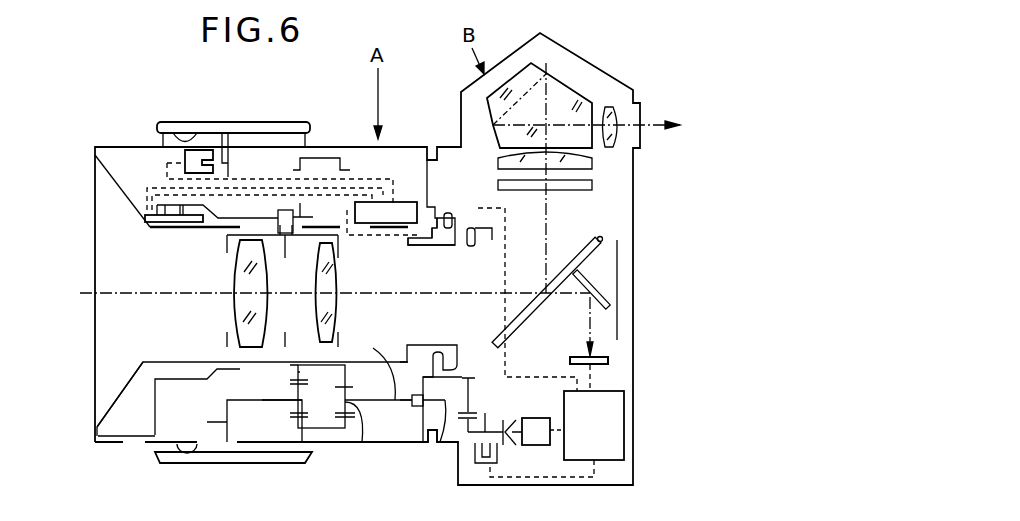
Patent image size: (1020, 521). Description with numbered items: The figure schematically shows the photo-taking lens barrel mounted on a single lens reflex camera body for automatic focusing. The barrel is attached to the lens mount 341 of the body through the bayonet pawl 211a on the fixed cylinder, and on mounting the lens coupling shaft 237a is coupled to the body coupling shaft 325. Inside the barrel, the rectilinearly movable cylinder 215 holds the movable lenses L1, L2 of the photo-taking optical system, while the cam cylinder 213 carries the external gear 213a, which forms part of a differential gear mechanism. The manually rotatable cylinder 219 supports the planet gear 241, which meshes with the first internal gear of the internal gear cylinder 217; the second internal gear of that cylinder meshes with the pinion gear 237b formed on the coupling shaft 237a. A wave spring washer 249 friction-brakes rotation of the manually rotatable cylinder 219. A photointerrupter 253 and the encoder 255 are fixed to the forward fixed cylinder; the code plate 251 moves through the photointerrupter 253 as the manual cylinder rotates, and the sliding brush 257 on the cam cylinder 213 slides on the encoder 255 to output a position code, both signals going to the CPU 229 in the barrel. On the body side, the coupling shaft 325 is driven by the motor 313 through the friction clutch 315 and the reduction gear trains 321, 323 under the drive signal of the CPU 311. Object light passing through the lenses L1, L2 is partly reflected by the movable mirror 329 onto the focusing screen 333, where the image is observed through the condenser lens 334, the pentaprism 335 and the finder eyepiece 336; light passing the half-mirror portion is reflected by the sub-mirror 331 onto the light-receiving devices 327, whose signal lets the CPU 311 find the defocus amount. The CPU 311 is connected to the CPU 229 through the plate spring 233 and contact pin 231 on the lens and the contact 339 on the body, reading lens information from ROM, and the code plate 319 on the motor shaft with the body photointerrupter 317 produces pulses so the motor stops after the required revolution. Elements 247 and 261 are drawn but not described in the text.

The bayonet pawl 211a is at (447, 211).
The cam cylinder 213 is at (230, 370).
The external gear 213a is at (300, 372).
The rectilinearly movable cylinder 215 is at (227, 343).
The internal gear cylinder 217 is at (320, 428).
The manually rotatable cylinder 219 is at (217, 433).
The CPU in the barrel 229 is at (363, 202).
The contact pin 231 is at (469, 233).
The plate spring 233 is at (440, 216).
The coupling shaft 237a is at (373, 364).
The pinion gear 237b is at (358, 442).
The planet gear 241 is at (295, 402).
The lens mount member 247 is at (285, 210).
The wave spring washer 249 is at (173, 135).
The code plate 251 is at (222, 133).
The photointerrupter 253 is at (197, 150).
The encoder 255 is at (147, 218).
The sliding brush 257 is at (173, 207).
The front wall 261 is at (155, 391).
The CPU in the body 311 is at (617, 427).
The motor 313 is at (540, 446).
The friction clutch 315 is at (508, 446).
The photointerrupter in the body 317 is at (481, 463).
The code plate 319 is at (487, 422).
The reduction gear train 321 is at (455, 447).
The reduction gear train 323 is at (477, 357).
The coupling shaft of the camera body 325 is at (452, 443).
The light-receiving devices 327 is at (605, 356).
The movable mirror 329 is at (592, 248).
The sub-mirror 331 is at (600, 300).
The focusing screen 333 is at (592, 184).
The condenser lens 334 is at (592, 164).
The pentaprism 335 is at (563, 95).
The finder eyepiece 336 is at (615, 108).
The contact of the body side 339 is at (471, 228).
The lens mount 341 is at (407, 237).
The movable lens L1 is at (238, 268).
The movable lens L2 is at (318, 305).